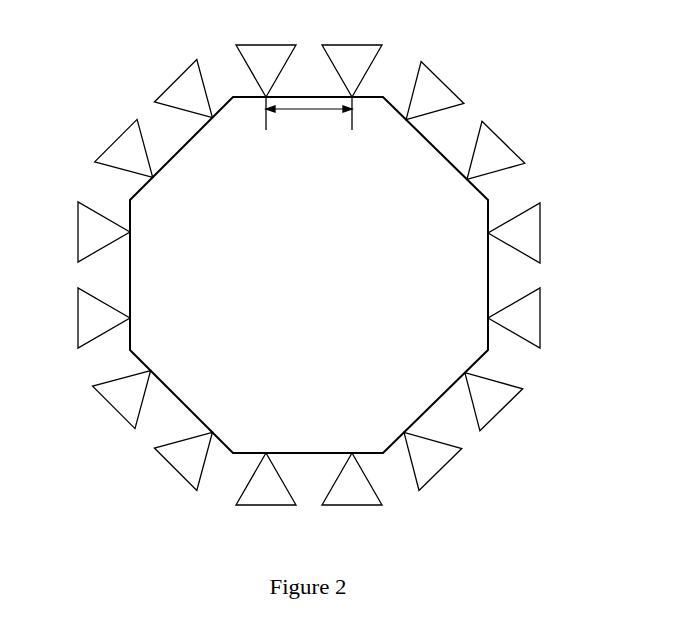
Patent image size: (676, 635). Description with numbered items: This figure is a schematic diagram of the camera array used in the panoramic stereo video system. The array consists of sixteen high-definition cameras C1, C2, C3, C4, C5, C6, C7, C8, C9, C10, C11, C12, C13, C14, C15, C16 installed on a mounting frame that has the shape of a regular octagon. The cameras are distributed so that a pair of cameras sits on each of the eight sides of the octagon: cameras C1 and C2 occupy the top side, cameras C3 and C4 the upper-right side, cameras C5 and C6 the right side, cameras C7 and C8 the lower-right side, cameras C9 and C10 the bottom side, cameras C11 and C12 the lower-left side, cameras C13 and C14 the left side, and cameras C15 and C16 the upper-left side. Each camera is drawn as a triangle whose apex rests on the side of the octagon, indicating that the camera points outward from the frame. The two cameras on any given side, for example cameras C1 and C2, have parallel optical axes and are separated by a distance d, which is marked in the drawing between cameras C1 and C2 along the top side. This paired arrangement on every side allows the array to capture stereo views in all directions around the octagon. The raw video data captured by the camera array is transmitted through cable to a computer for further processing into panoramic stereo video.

The camera C1 is at (266, 62).
The camera C2 is at (352, 62).
The camera C3 is at (435, 91).
The camera C4 is at (498, 150).
The camera C5 is at (529, 233).
The camera C6 is at (529, 318).
The camera C7 is at (498, 402).
The camera C8 is at (436, 461).
The camera C9 is at (352, 488).
The camera C10 is at (266, 488).
The camera C11 is at (177, 461).
The camera C12 is at (114, 400).
The camera C13 is at (86, 318).
The camera C14 is at (86, 232).
The camera C15 is at (115, 148).
The camera C16 is at (174, 89).
The distance d is at (309, 113).